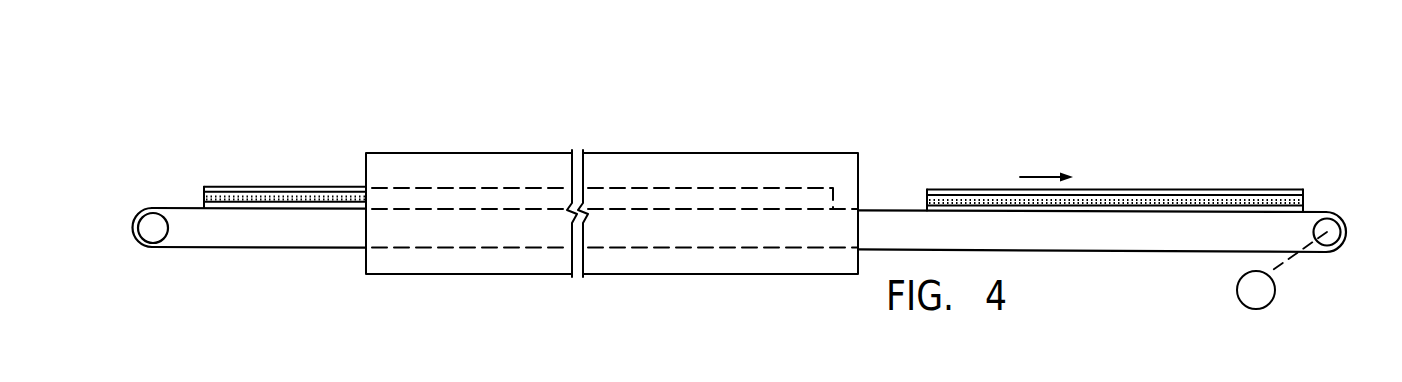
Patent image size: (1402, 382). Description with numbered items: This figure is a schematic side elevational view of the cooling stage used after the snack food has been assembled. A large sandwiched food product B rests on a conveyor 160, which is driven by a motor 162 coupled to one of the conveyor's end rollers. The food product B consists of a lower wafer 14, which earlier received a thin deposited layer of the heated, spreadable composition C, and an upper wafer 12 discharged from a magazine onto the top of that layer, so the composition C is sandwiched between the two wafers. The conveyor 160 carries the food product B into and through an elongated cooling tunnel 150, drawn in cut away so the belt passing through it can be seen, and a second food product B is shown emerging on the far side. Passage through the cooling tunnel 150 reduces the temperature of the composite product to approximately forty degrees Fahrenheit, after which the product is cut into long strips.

The sandwiched food product B is at (215, 165).
The wafer 12 is at (275, 190).
The wafer 14 is at (240, 207).
The composition C is at (317, 188).
The cooling tunnel 150 is at (518, 160).
The conveyor 160 is at (1208, 252).
The motor 162 is at (1277, 290).